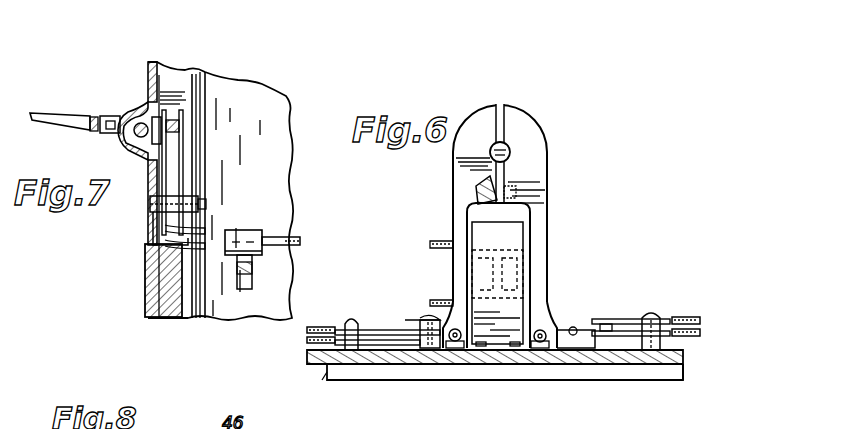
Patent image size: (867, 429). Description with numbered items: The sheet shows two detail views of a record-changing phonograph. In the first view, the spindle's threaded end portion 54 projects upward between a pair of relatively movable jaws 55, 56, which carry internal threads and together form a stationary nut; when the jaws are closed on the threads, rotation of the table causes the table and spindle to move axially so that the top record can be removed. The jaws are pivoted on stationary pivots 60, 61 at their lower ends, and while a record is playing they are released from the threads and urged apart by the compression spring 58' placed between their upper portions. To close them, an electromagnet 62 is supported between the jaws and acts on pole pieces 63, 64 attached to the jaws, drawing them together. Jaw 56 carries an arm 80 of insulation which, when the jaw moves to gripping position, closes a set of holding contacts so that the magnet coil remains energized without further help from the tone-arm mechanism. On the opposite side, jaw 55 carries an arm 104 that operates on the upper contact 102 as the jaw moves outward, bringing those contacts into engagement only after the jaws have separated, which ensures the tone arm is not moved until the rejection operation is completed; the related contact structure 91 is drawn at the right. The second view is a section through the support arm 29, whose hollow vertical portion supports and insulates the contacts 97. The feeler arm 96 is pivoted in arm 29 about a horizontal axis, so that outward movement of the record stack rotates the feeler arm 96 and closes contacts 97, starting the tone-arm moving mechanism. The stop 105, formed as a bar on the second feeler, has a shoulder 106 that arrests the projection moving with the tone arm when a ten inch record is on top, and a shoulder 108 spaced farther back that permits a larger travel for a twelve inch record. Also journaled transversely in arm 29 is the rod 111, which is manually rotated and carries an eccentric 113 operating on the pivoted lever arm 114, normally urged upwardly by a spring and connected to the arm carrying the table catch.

In FIG. 7, the arm 29 is at (152, 290).
In FIG. 7, the feeler arm 96 is at (140, 112).
In FIG. 7, the contacts 97 is at (172, 120).
In FIG. 7, the stop 105 is at (58, 114).
In FIG. 7, the shoulder 106 is at (86, 128).
In FIG. 7, the shoulder 108 is at (108, 134).
In FIG. 7, the rod 111 is at (298, 242).
In FIG. 7, the eccentric 113 is at (245, 238).
In FIG. 7, the lever arm 114 is at (252, 268).
In FIG. 6, the threaded end portion 54 is at (508, 150).
In FIG. 6, the jaw 55 is at (475, 168).
In FIG. 6, the jaw 56 is at (540, 160).
In FIG. 6, the compression spring 58' is at (471, 195).
In FIG. 6, the pivot 60 is at (458, 341).
In FIG. 6, the pivot 61 is at (545, 340).
In FIG. 6, the electromagnet 62 is at (510, 228).
In FIG. 6, the pole piece 63 is at (480, 272).
In FIG. 6, the pole piece 64 is at (510, 271).
In FIG. 6, the arm of insulation 80 is at (600, 340).
In FIG. 6, the right contact spring 91 is at (616, 320).
In FIG. 6, the contacts 102 is at (400, 331).
In FIG. 6, the arm 104 is at (420, 325).